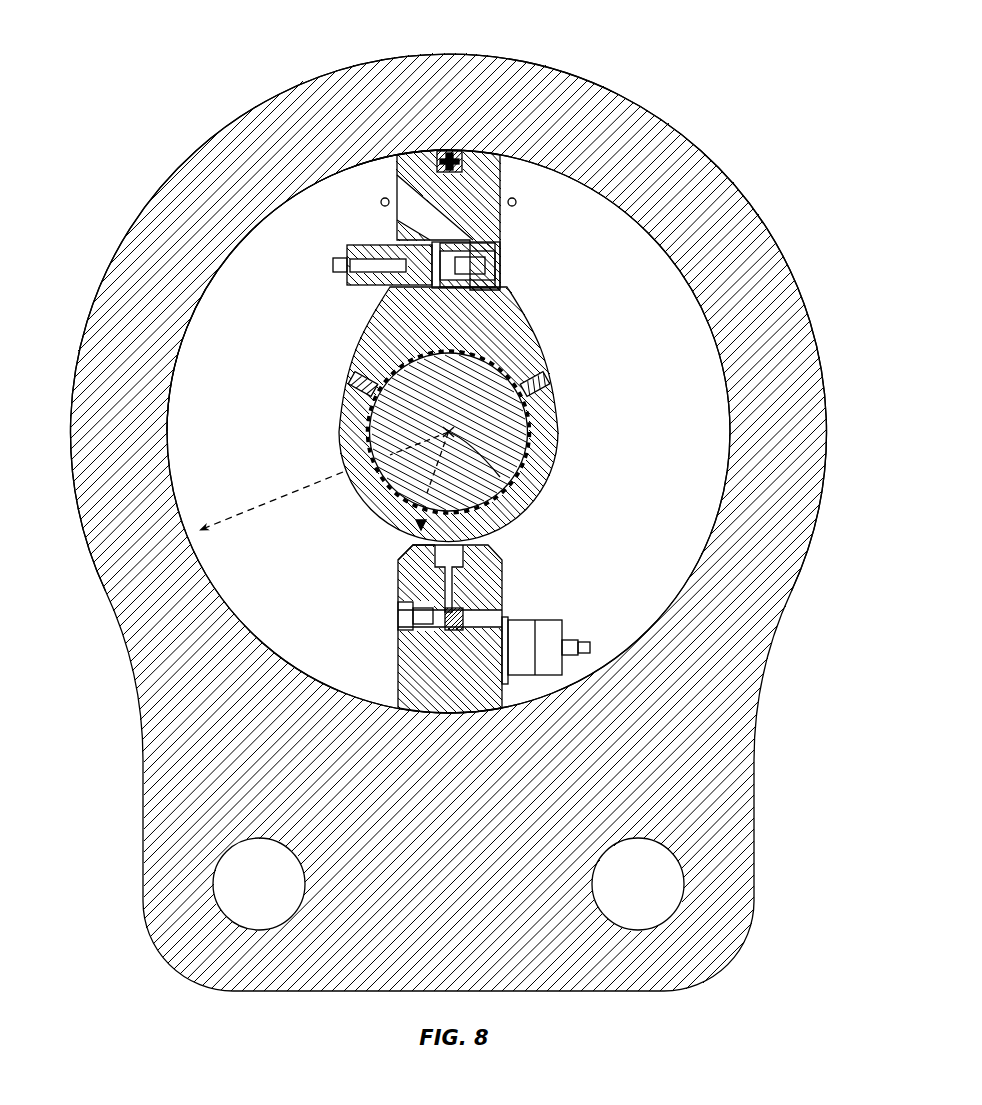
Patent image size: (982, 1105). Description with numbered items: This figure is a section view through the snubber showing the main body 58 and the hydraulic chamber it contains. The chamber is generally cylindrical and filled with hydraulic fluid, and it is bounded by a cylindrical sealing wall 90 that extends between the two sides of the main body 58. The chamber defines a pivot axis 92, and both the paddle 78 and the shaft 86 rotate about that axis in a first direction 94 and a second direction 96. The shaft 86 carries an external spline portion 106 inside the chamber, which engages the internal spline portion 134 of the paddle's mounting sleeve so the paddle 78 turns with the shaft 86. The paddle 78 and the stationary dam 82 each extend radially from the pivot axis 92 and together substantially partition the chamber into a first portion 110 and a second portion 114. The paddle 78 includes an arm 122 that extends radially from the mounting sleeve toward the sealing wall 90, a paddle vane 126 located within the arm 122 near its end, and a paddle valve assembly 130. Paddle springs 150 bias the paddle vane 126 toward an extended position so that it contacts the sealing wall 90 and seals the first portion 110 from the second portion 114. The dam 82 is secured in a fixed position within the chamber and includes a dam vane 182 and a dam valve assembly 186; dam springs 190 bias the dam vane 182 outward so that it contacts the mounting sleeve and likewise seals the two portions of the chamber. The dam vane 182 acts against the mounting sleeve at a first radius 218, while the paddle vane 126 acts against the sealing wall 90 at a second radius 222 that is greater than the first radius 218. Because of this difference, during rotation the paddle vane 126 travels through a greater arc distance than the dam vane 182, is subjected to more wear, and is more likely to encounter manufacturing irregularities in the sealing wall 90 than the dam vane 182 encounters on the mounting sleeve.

The main body 58 is at (724, 685).
The second portion 114 is at (680, 324).
The sealing wall 90 is at (712, 453).
The first portion 110 is at (228, 303).
The first direction 94 is at (45, 460).
The second direction 96 is at (855, 462).
The arm 122 is at (485, 214).
The paddle vane 126 is at (450, 152).
The paddle springs 150 is at (472, 175).
The paddle valve assembly 130 is at (312, 288).
The paddle 78 is at (520, 320).
The external spline portion 106 is at (383, 355).
The shaft 86 is at (482, 392).
The internal spline portion 134 is at (503, 430).
The pivot axis 92 is at (523, 457).
The first radius 218 is at (372, 519).
The second radius 222 is at (273, 498).
The dam 82 is at (367, 651).
The dam vane 182 is at (430, 547).
The dam springs 190 is at (463, 567).
The dam valve assembly 186 is at (578, 620).